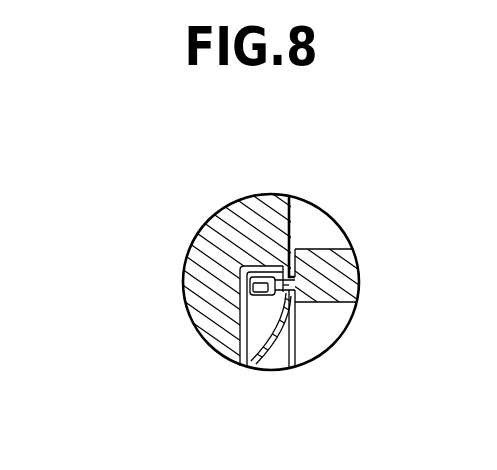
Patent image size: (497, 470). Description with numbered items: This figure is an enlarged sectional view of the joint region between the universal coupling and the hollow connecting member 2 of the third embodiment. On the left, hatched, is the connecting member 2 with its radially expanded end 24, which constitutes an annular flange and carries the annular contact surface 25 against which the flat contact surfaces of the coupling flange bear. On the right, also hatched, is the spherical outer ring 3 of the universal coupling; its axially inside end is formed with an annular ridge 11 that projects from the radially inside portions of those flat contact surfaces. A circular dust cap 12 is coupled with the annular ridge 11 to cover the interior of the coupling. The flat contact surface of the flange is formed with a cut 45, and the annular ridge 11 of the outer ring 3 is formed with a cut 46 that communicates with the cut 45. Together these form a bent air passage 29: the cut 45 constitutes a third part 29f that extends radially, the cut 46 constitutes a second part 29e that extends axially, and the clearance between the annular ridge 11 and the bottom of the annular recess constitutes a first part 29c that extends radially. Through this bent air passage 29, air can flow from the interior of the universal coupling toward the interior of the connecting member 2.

The connecting member 2 is at (213, 333).
The spherical outer ring 3 is at (248, 260).
The annular ridge 11 is at (283, 285).
The dust cap 12 is at (277, 357).
The radially expanded end 24 is at (268, 194).
The annular contact surface 25 is at (290, 216).
The air passage 29 is at (171, 286).
The third part of air passage 29f is at (258, 244).
The second part of air passage 29e is at (242, 262).
The first part of air passage 29c is at (240, 287).
The cut 45 is at (322, 247).
The cut 46 is at (293, 331).